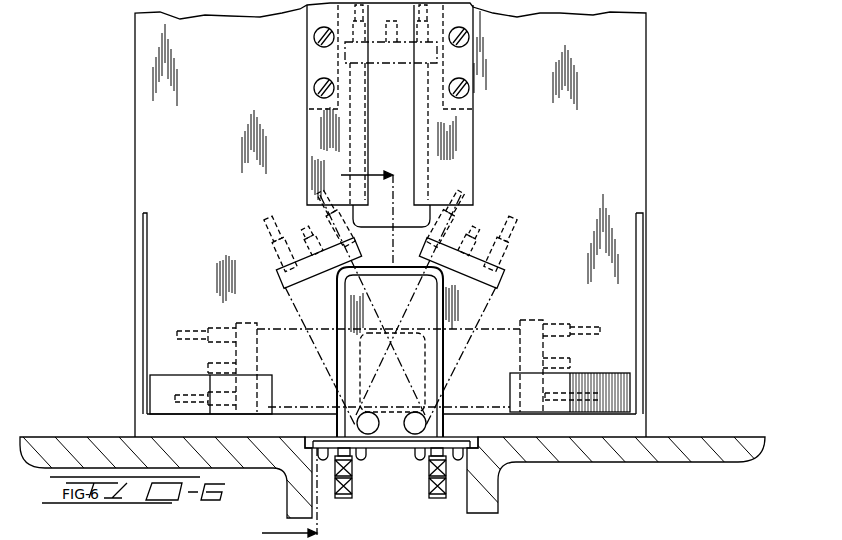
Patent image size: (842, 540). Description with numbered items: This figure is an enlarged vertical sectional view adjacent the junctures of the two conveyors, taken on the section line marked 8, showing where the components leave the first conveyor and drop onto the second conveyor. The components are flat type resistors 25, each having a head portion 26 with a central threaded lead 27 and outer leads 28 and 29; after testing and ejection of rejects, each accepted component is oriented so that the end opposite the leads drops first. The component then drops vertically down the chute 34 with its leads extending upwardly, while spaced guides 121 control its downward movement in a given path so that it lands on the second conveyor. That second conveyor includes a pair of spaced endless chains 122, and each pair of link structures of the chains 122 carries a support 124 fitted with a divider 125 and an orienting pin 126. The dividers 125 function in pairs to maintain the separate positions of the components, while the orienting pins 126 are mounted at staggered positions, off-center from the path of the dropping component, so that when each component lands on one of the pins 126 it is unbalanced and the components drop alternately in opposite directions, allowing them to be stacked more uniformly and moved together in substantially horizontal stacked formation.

The section line 8- 8 is at (318, 354).
The flat type resistor 25 is at (244, 323).
The head portion 26 is at (284, 279).
The central threaded lead 27 is at (306, 236).
The outer lead 28 is at (270, 218).
The outer lead 29 is at (320, 192).
The chute 34 is at (147, 219).
The spaced guides 121 is at (316, 64).
The endless chains 122 is at (410, 481).
The support 124 is at (403, 447).
The divider 125 is at (438, 372).
The orienting pin 126 is at (370, 412).